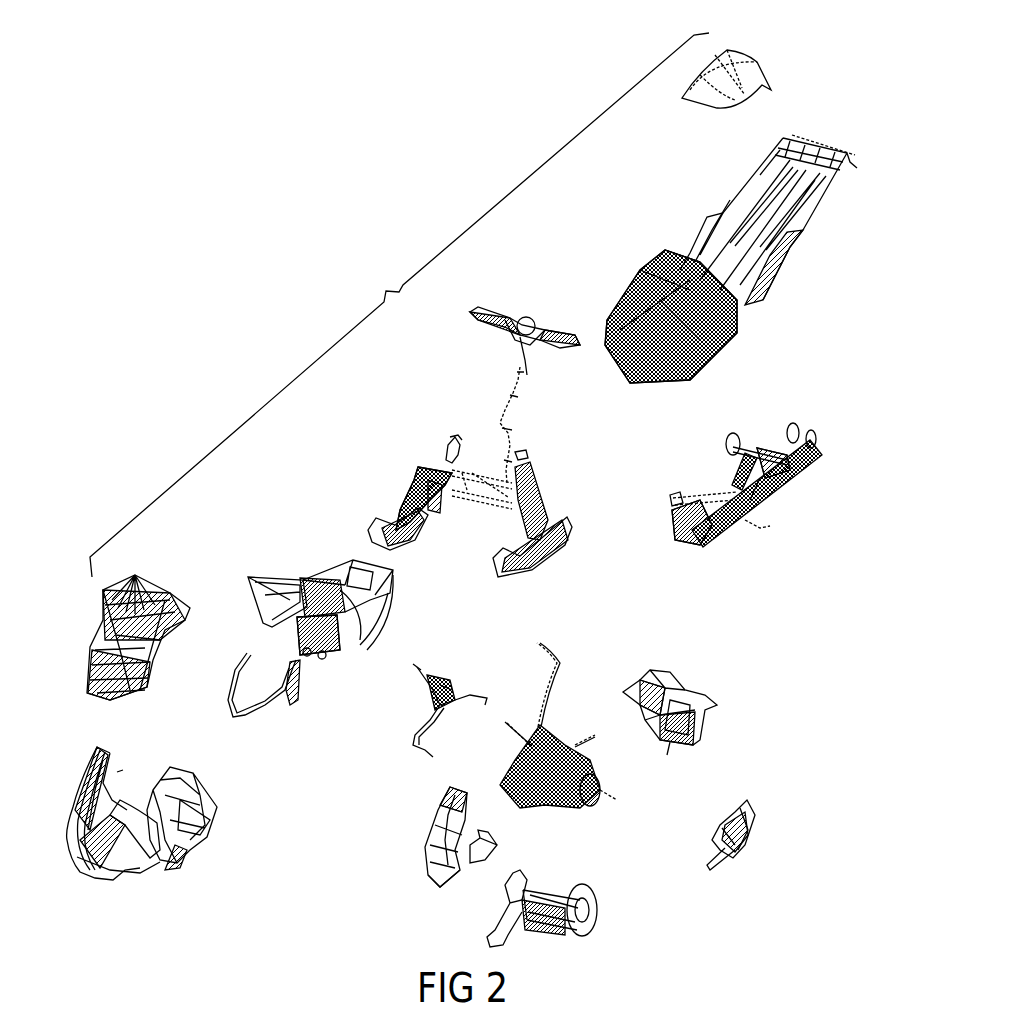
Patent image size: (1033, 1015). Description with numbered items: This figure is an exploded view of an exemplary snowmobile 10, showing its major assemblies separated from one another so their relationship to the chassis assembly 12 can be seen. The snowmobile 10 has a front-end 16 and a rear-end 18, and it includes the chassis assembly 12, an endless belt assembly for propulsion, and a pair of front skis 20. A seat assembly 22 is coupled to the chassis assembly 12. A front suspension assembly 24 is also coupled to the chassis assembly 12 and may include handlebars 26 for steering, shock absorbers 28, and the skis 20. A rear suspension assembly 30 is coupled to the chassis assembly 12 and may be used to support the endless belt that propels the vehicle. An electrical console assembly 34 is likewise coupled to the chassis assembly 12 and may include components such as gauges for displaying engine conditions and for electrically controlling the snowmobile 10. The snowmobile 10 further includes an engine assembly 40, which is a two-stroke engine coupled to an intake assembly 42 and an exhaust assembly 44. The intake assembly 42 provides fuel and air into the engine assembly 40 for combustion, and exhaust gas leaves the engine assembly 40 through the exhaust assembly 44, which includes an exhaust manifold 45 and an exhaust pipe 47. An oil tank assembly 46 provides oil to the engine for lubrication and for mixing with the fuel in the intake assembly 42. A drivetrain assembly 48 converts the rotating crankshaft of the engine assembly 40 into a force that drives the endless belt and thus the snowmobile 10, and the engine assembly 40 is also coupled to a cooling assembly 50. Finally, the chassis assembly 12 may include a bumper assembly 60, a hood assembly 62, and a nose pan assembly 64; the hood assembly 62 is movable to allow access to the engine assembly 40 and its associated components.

The snowmobile 10 is at (399, 305).
The chassis assembly 12 is at (780, 140).
The front-end 16 is at (95, 893).
The rear-end 18 is at (799, 86).
The front skis 20 is at (372, 524).
The seat assembly 22 is at (700, 76).
The front suspension assembly 24 is at (423, 467).
The handlebars 26 is at (478, 312).
The shock absorbers 28 is at (450, 447).
The rear suspension assembly 30 is at (712, 545).
The electrical console assembly 34 is at (311, 575).
The engine assembly 40 is at (545, 797).
The intake assembly 42 is at (688, 680).
The exhaust assembly 44 is at (420, 848).
The exhaust manifold 45 is at (498, 851).
The oil tank assembly 46 is at (728, 822).
The exhaust pipe 47 is at (440, 876).
The drivetrain assembly 48 is at (552, 938).
The cooling assembly 50 is at (430, 670).
The bumper assembly 60 is at (233, 718).
The hood assembly 62 is at (140, 578).
The nose pan assembly 64 is at (165, 870).